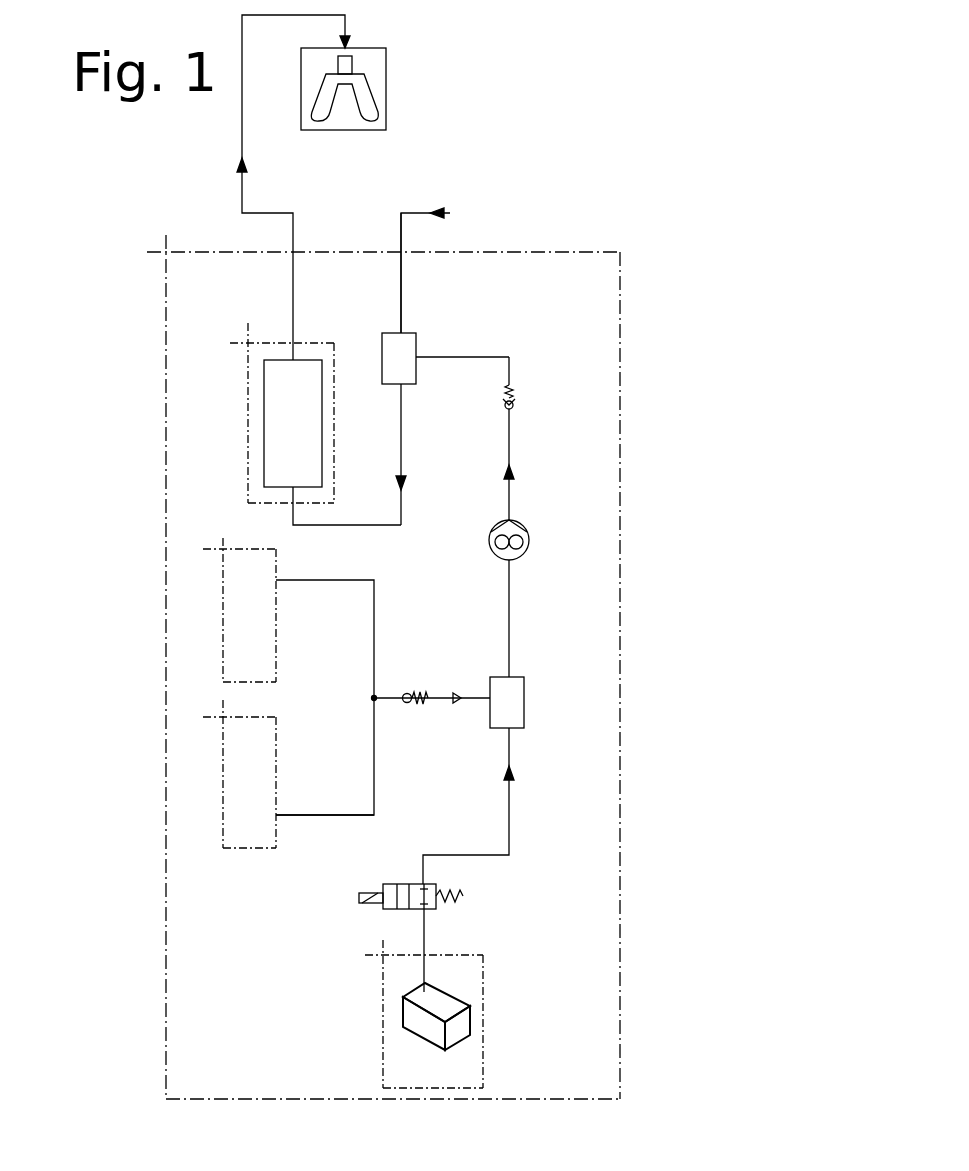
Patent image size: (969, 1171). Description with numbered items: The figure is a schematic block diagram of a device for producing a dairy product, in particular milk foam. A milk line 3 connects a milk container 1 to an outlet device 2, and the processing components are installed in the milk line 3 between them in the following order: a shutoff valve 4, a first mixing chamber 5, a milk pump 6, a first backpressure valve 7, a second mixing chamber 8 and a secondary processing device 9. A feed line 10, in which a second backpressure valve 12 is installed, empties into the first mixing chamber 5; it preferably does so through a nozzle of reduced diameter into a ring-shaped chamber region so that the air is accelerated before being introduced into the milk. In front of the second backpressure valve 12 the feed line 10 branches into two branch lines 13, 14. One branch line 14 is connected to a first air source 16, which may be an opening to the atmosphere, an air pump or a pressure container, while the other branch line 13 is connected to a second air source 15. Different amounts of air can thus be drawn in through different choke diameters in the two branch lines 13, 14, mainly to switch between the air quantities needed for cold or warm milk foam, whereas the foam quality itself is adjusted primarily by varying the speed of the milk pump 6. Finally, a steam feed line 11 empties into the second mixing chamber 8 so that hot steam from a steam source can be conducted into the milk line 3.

The milk container 1 is at (462, 1023).
The outlet device 2 is at (373, 100).
The milk line 3 is at (509, 825).
The shutoff valve 4 is at (384, 910).
The first mixing chamber 5 is at (524, 697).
The milk pump 6 is at (528, 537).
The first backpressure valve 7 is at (515, 407).
The second mixing chamber 8 is at (417, 331).
The secondary processing device 9 is at (248, 402).
The feed line 10 is at (435, 700).
The steam feed line 11 is at (401, 230).
The second backpressure valve 12 is at (415, 695).
The branch line 13 is at (373, 793).
The branch line 14 is at (374, 628).
The second air source 15 is at (224, 781).
The first air source 16 is at (224, 614).